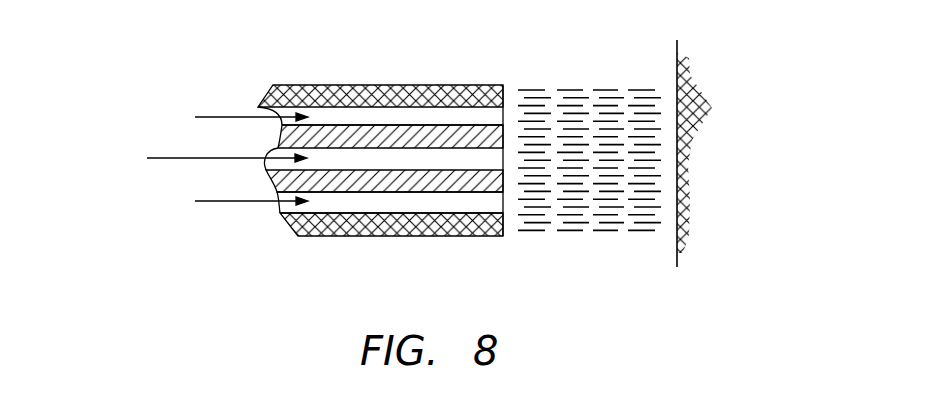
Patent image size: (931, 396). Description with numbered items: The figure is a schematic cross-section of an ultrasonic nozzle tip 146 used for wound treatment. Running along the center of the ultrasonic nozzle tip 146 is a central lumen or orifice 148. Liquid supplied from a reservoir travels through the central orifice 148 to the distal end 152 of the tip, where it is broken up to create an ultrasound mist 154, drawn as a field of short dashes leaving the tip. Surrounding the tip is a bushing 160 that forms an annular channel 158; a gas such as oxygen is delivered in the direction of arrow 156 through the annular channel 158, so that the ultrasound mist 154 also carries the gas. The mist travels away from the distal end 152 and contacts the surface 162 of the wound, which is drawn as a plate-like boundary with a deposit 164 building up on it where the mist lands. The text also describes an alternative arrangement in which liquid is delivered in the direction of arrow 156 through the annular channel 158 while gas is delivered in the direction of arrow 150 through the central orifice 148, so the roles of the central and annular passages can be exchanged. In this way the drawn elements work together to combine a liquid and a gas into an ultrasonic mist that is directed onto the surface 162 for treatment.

The ultrasonic nozzle tip 146 is at (357, 183).
The central lumen or orifice 148 is at (387, 163).
The arrow 150 is at (162, 158).
The distal end 152 is at (503, 180).
The ultrasound mist 154 is at (570, 128).
The arrow 156 is at (230, 116).
The annular channel 158 is at (452, 117).
The bushing 160 is at (352, 84).
The surface 162 is at (677, 65).
The deposited film 164 is at (707, 108).